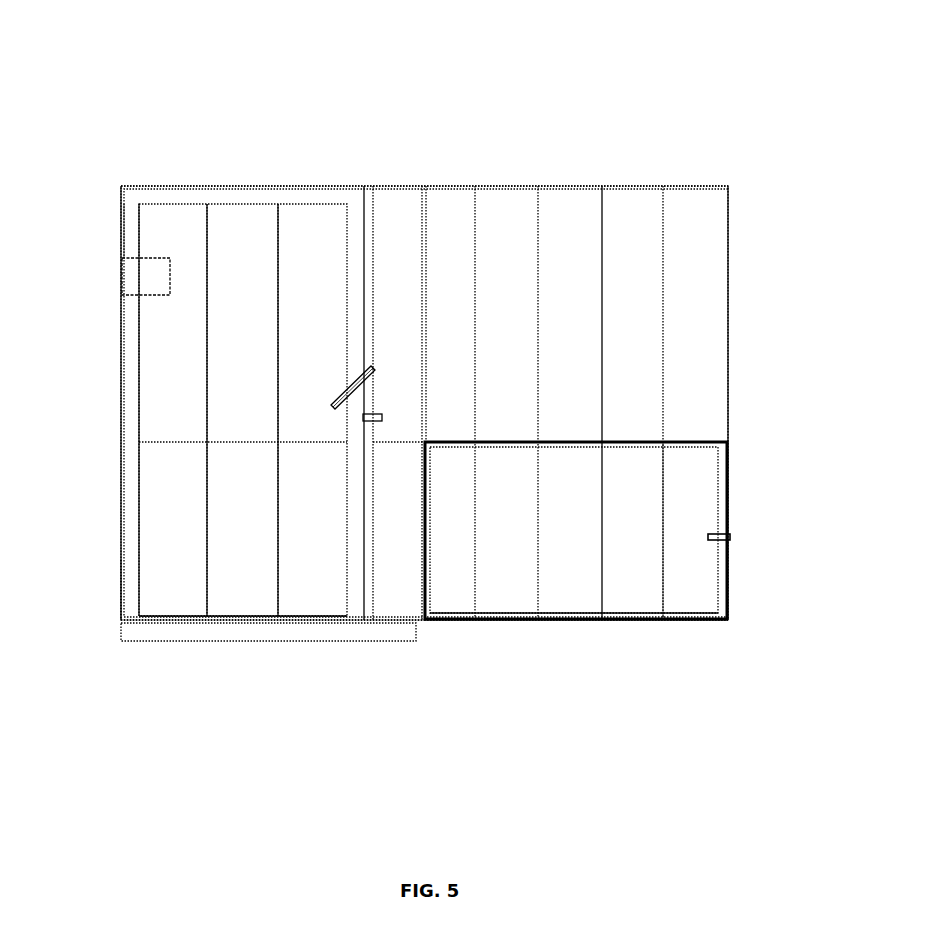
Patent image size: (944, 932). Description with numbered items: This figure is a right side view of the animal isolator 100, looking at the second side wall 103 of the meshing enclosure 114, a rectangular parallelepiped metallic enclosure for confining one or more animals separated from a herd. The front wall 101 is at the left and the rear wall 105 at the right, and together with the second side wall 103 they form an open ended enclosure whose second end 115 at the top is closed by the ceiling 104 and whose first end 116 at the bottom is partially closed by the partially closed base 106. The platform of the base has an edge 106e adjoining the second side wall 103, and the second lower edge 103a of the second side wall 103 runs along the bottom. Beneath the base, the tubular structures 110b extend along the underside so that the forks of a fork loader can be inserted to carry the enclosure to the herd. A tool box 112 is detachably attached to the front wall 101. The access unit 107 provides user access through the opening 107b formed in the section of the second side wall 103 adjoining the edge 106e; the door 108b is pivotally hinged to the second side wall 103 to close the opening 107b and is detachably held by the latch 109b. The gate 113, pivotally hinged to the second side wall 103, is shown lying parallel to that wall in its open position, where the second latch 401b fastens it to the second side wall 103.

The animal isolator 100 is at (403, 70).
The front wall 101 is at (112, 350).
The second side wall 103 is at (470, 226).
The second lower edge 103a is at (662, 622).
The ceiling 104 is at (393, 187).
The rear wall 105 is at (730, 382).
The partially closed base 106 is at (720, 620).
The edge 106e is at (284, 614).
The access unit 107 is at (282, 170).
The opening 107b is at (237, 226).
The door 108b is at (131, 228).
The latch 109b is at (336, 401).
The tubular structures 110b is at (199, 628).
The tool box 112 is at (131, 278).
The gate 113 is at (642, 448).
The meshing enclosure 114 is at (87, 575).
The second end 115 is at (592, 174).
The first end 116 is at (470, 645).
The second latch 401b is at (719, 544).